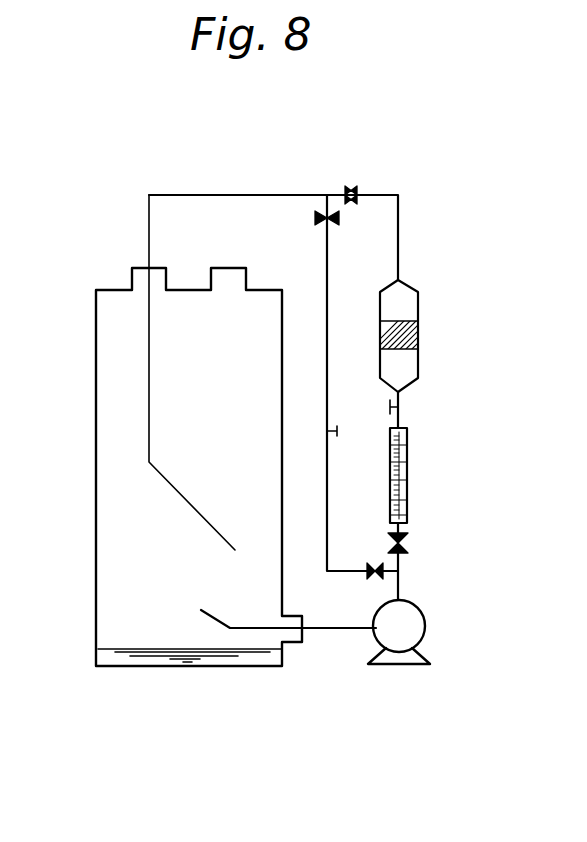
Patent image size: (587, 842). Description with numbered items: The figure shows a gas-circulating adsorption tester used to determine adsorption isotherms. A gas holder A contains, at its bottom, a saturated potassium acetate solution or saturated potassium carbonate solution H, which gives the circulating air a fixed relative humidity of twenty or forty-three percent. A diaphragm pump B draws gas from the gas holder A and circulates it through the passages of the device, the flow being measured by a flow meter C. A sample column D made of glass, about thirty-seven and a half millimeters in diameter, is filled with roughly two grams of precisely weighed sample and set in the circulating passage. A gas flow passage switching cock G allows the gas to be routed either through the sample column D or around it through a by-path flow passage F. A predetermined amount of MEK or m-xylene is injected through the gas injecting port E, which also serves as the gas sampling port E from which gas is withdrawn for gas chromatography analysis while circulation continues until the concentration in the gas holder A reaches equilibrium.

The gas holder A is at (96, 415).
The diaphragm pump B is at (426, 628).
The flow meter C is at (408, 480).
The sample column D is at (418, 333).
The gas injecting port E is at (390, 407).
The by-path flow passage F is at (327, 287).
The gas flow passage switching cock G is at (352, 207).
The saturated potassium acetate solution or saturated potassium carbonate solution H is at (98, 656).